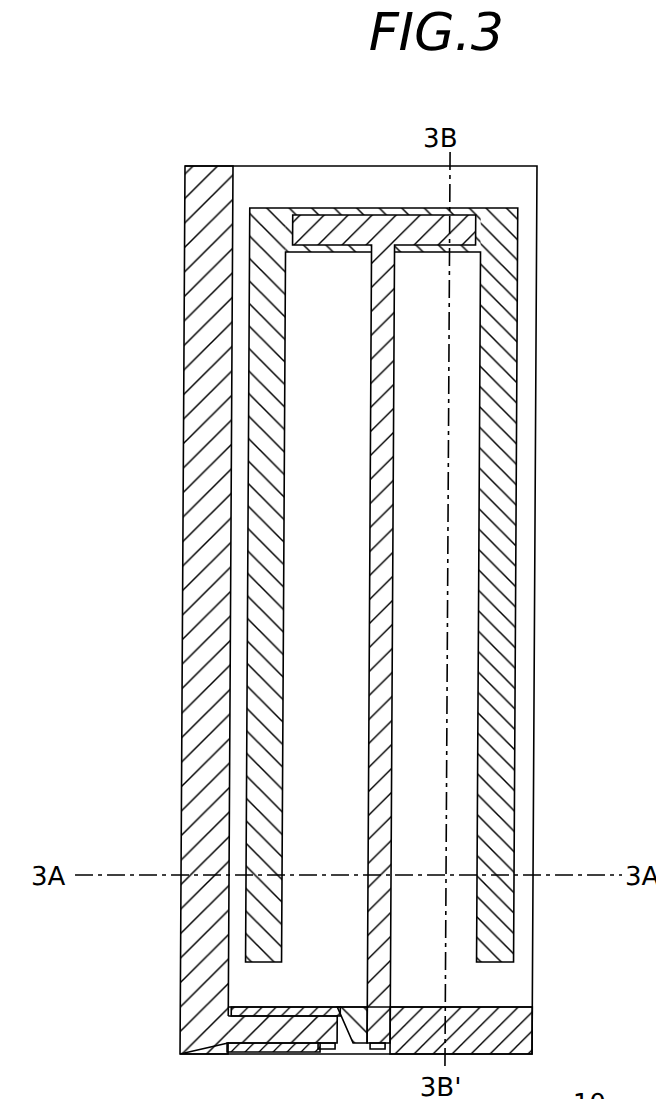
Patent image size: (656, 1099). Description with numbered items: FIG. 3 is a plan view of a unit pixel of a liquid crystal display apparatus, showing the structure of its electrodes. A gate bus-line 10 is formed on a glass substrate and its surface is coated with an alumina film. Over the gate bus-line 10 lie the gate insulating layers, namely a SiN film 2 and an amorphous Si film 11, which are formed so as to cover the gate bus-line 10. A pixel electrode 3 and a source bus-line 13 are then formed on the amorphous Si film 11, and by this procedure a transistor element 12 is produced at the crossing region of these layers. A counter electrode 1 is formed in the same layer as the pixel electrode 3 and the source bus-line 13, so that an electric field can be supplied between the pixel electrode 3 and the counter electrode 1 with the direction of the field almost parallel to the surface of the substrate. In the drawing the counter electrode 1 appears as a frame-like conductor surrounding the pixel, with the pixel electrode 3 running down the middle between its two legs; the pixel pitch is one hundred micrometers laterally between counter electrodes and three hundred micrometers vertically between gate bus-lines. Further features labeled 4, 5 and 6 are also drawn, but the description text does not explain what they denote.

The counter electrode 1 is at (276, 408).
The SiN film 2 is at (655, 818).
The pixel electrode 3 is at (471, 228).
The insulating layer 4 is at (655, 936).
The insulating layer 5 is at (655, 1025).
The element 6 is at (655, 628).
The gate bus-line 10 is at (522, 1020).
The amorphous Si film 11 is at (354, 1010).
The transistor element 12 is at (427, 1066).
The source bus-line 13 is at (192, 205).